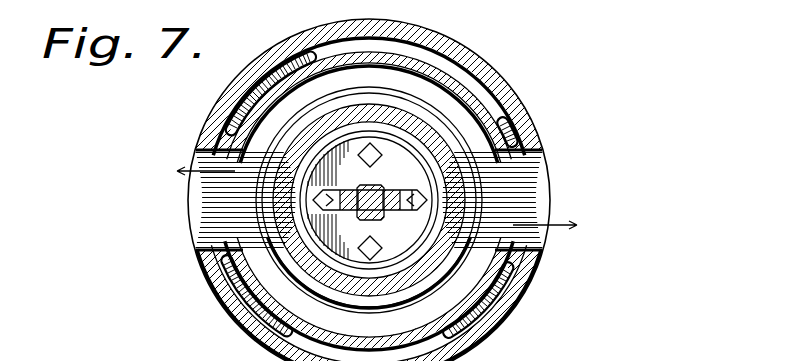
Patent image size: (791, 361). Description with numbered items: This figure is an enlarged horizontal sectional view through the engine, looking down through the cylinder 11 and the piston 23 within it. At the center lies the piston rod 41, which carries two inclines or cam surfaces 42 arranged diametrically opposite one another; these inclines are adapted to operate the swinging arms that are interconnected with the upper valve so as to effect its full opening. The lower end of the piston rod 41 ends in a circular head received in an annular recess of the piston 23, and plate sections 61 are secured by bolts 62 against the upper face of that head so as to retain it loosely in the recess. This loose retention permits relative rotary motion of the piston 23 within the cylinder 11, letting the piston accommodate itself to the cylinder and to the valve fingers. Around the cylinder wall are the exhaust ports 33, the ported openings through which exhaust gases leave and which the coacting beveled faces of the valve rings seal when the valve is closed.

The cylinder 11 is at (430, 199).
The piston 23 is at (316, 204).
The exhaust ports 33 is at (204, 203).
The piston rod 41 is at (366, 222).
The cam surfaces 42 is at (400, 179).
The plate sections 61 is at (485, 259).
The bolts 62 is at (466, 276).